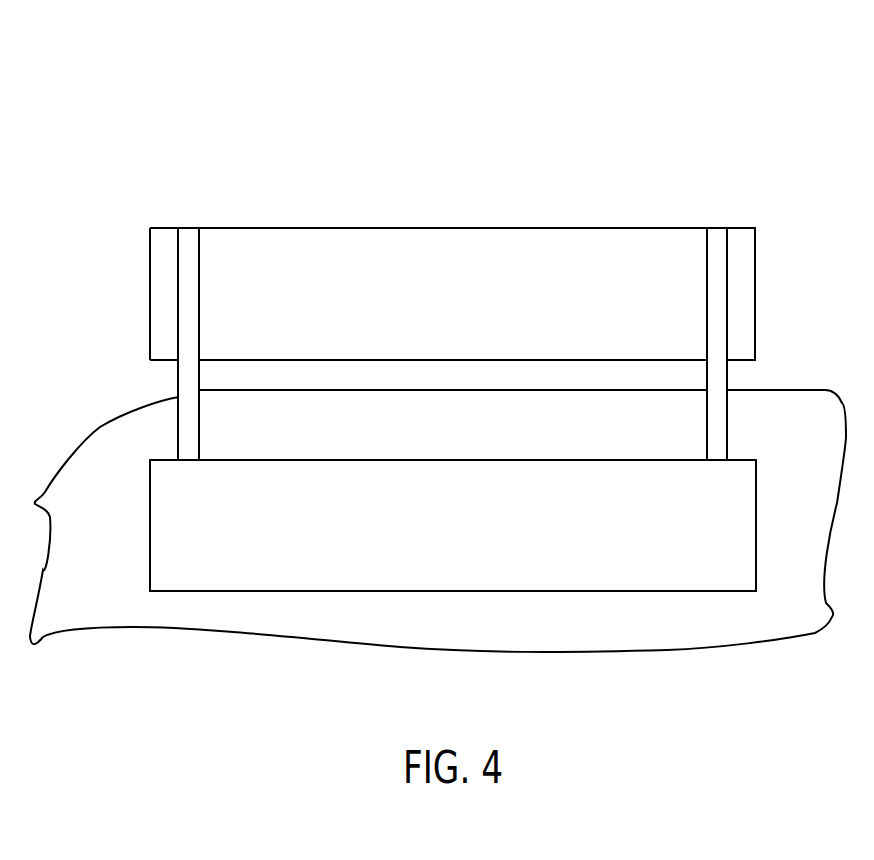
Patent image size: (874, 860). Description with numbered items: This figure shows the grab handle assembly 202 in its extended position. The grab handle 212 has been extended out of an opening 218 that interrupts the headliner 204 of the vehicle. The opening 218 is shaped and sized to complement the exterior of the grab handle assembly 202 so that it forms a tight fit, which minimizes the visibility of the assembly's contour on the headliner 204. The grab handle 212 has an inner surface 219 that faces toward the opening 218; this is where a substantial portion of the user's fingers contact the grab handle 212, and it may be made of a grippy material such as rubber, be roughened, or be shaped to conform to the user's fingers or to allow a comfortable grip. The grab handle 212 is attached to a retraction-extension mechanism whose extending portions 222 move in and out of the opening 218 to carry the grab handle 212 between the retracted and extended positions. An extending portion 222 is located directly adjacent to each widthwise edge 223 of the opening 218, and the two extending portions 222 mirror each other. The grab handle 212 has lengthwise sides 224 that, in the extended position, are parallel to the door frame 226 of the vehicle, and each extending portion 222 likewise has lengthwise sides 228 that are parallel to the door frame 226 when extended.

The grab handle assembly 202 is at (458, 175).
The headliner 204 is at (82, 91).
The grab handle 212 is at (756, 526).
The opening 218 is at (318, 228).
The inner surface 219 is at (403, 460).
The extending portion 222 is at (179, 432).
The widthwise edge 223 is at (150, 282).
The lengthwise sides 224 is at (468, 539).
The door frame 226 is at (68, 460).
The lengthwise sides 228 is at (187, 380).